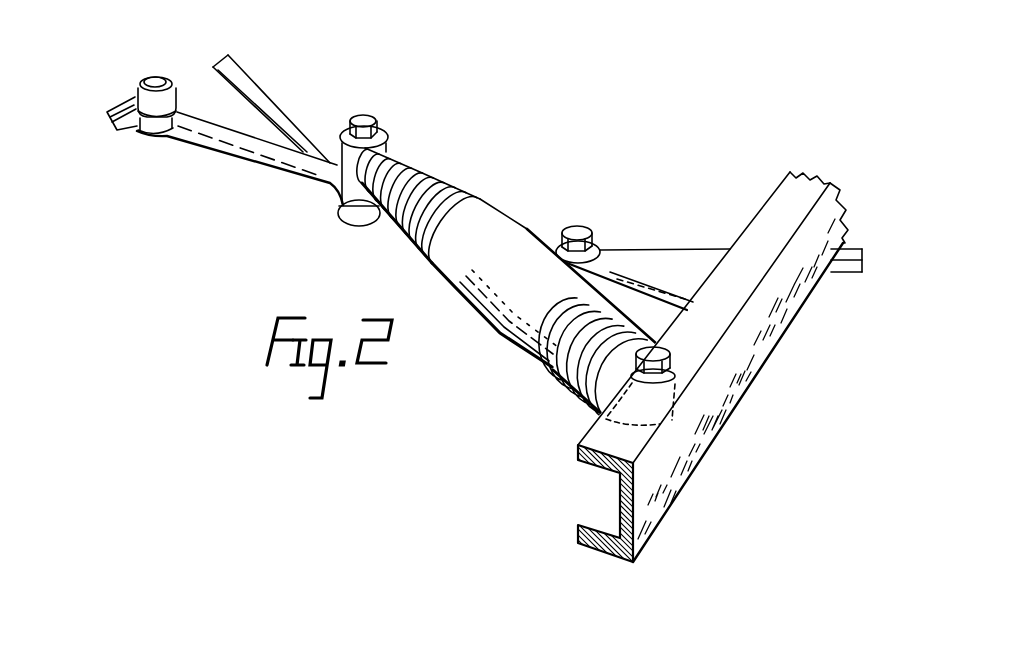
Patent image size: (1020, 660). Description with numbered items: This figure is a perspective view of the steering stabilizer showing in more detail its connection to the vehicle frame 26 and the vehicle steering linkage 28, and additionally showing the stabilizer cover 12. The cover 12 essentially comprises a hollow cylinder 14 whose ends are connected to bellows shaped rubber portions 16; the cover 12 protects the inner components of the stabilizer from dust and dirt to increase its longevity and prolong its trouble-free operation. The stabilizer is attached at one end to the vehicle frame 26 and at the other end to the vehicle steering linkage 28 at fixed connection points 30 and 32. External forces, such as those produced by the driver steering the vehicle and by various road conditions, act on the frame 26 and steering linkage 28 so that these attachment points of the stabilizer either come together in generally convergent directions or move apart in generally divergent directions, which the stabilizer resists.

The cover 12 is at (423, 258).
The hollow cylinder 14 is at (484, 316).
The bellows shaped rubber portions 16 is at (420, 157).
The vehicle frame 26 is at (785, 303).
The vehicle steering linkage 28 is at (182, 96).
The fixed connection point 30 is at (677, 383).
The fixed connection point 32 is at (322, 187).